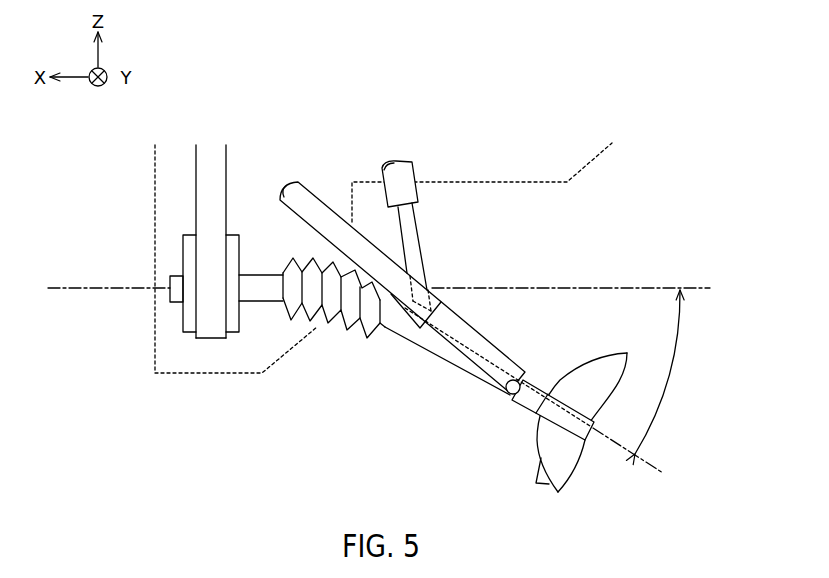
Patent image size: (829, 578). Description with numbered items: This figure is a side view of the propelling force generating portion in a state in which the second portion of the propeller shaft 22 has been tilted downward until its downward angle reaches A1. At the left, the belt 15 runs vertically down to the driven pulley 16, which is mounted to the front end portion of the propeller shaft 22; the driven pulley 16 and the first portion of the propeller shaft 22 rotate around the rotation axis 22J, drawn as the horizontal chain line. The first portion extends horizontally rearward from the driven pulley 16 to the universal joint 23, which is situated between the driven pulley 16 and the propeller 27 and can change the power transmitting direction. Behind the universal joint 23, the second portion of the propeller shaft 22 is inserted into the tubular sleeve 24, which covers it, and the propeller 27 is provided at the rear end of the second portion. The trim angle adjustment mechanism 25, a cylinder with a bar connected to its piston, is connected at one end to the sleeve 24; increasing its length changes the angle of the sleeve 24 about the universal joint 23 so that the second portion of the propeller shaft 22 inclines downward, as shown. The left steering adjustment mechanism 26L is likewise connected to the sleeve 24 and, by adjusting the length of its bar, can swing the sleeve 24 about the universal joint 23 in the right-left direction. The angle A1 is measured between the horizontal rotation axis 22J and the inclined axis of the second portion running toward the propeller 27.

The belt 15 is at (194, 172).
The driven pulley 16 is at (182, 319).
The propeller shaft 22 is at (268, 305).
The rotation axis 22J is at (79, 287).
The universal joint 23 is at (357, 343).
The sleeve 24 is at (442, 364).
The trim angle adjustment mechanism 25 is at (422, 243).
The left steering adjustment mechanism 26L is at (490, 344).
The propeller 27 is at (576, 477).
The downward angle A1 is at (551, 381).